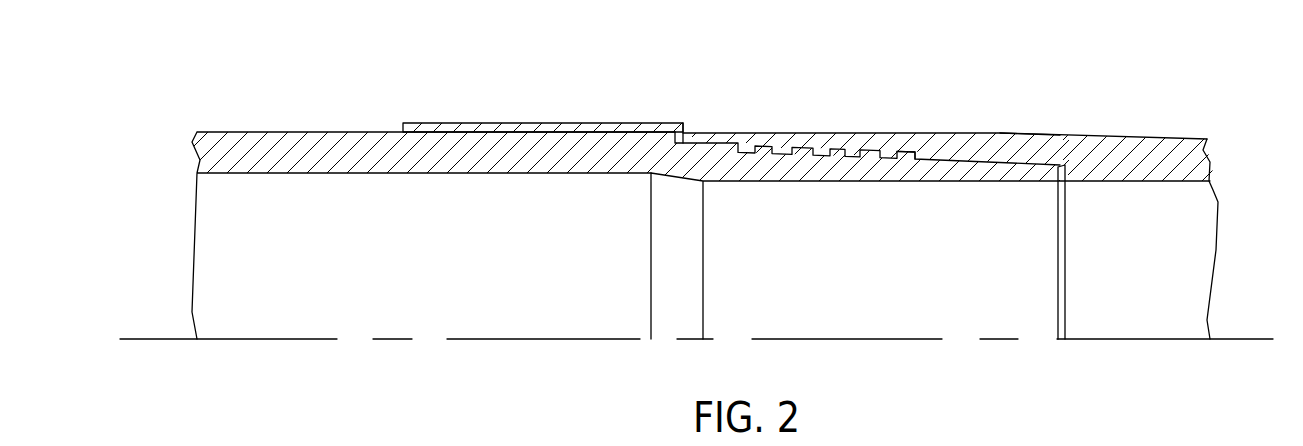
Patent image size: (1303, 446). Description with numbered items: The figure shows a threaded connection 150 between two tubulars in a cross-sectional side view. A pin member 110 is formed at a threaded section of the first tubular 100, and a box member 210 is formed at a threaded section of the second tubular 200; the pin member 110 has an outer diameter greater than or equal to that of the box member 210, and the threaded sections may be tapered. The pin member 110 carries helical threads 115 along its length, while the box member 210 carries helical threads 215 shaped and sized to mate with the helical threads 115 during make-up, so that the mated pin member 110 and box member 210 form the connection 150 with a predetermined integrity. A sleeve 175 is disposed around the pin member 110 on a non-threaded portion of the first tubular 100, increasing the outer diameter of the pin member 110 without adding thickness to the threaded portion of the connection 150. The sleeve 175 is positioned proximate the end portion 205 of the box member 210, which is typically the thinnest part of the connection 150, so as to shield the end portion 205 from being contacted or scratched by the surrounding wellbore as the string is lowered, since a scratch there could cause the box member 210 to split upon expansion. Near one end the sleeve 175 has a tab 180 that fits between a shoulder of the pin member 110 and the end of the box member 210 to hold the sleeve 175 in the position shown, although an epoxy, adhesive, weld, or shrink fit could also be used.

The first tubular 100 is at (293, 148).
The pin member 110 is at (930, 235).
The helical threads 115 is at (815, 158).
The threaded connection 150 is at (706, 106).
The sleeve 175 is at (540, 123).
The tab 180 is at (673, 137).
The second tubular 200 is at (1162, 160).
The end portion 205 is at (706, 137).
The box member 210 is at (997, 150).
The helical threads 215 is at (914, 150).